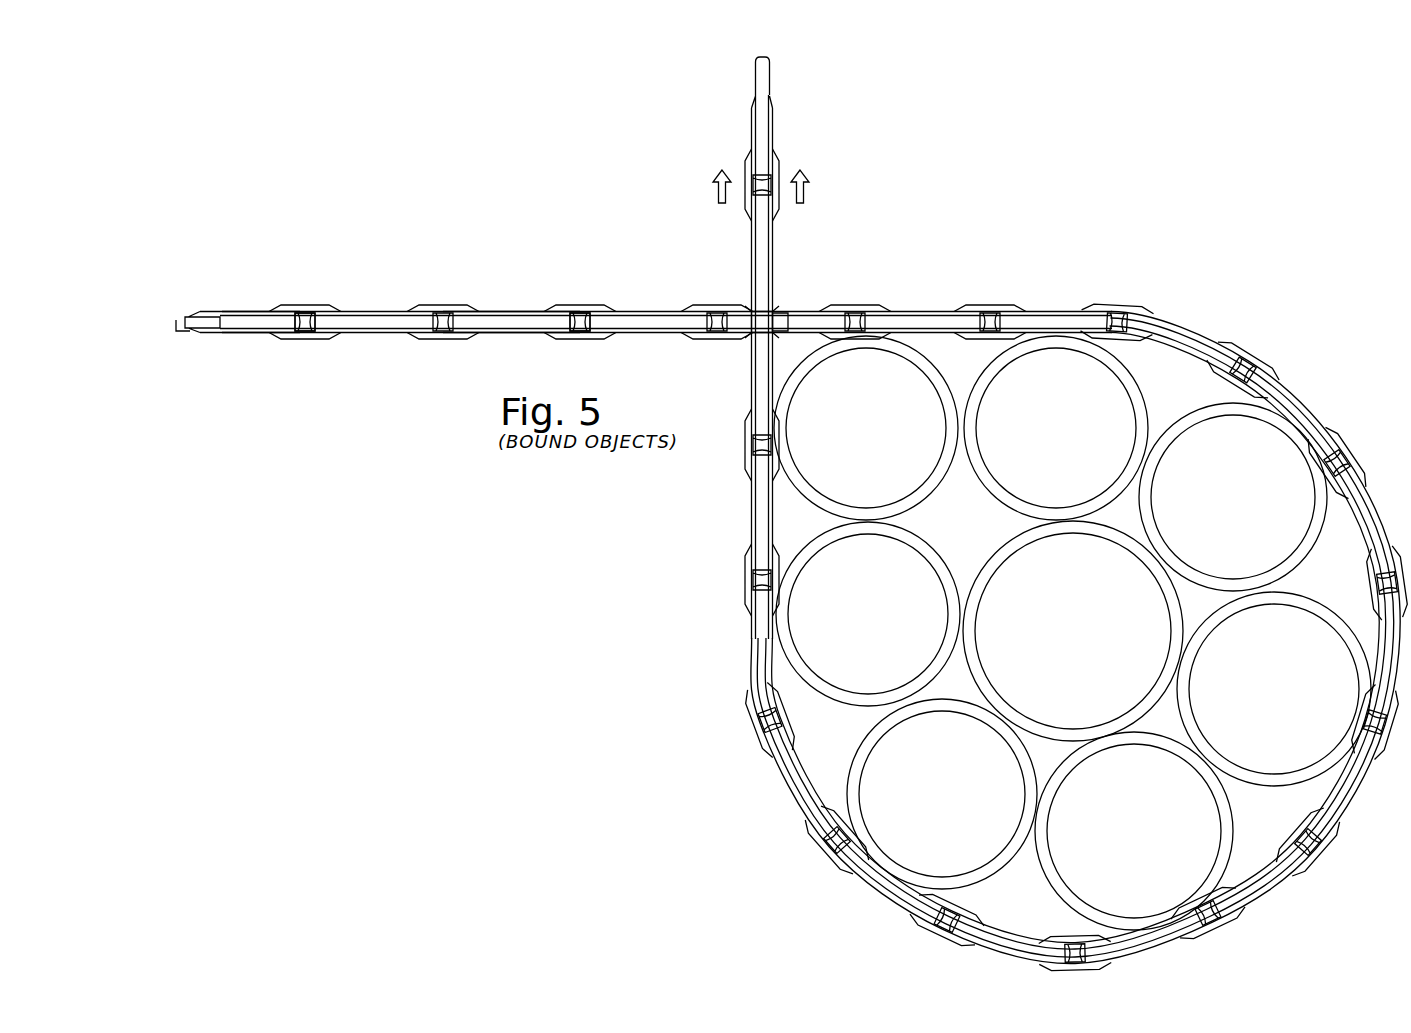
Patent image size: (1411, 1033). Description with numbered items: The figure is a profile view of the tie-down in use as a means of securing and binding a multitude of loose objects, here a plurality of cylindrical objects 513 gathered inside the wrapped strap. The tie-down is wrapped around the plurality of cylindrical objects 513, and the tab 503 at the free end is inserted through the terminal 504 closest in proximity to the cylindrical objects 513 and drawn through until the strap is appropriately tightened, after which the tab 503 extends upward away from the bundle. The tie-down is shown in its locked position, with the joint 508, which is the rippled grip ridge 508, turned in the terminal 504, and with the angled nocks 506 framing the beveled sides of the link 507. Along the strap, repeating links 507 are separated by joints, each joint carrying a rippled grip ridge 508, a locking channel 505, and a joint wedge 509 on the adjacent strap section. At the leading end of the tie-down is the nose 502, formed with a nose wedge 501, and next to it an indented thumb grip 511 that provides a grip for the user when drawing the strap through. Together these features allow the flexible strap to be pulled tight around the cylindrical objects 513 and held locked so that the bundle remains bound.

The nose wedge 501 is at (205, 330).
The nose 502 is at (183, 322).
The tab 503 is at (772, 157).
The terminal 504 is at (800, 314).
The locking channel 505 is at (313, 325).
The angled nock 506 is at (756, 333).
The link 507 is at (398, 311).
The rippled grip ridge 508 is at (332, 311).
The joint wedge 509 is at (548, 313).
The indented thumb grip 511 is at (278, 325).
The cylindrical object 513 is at (808, 372).